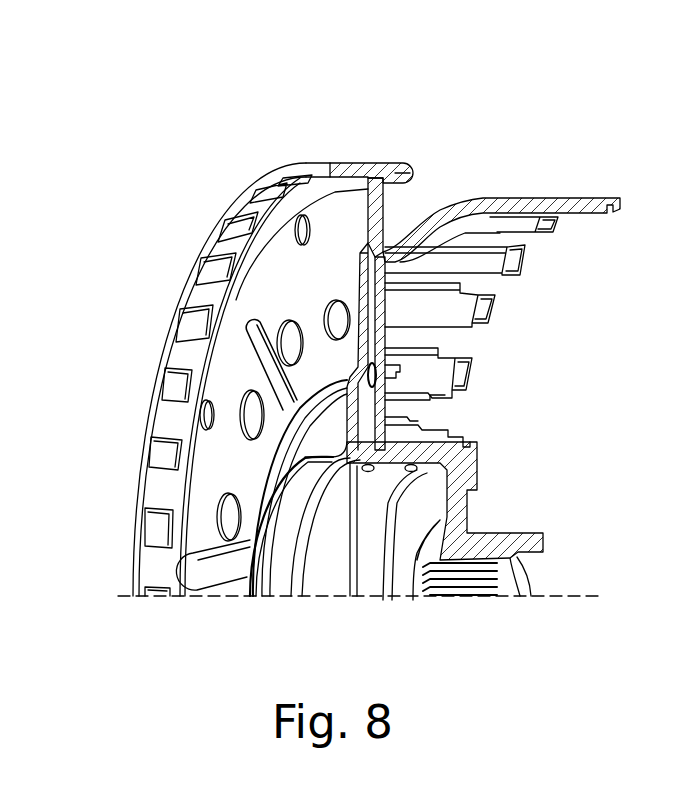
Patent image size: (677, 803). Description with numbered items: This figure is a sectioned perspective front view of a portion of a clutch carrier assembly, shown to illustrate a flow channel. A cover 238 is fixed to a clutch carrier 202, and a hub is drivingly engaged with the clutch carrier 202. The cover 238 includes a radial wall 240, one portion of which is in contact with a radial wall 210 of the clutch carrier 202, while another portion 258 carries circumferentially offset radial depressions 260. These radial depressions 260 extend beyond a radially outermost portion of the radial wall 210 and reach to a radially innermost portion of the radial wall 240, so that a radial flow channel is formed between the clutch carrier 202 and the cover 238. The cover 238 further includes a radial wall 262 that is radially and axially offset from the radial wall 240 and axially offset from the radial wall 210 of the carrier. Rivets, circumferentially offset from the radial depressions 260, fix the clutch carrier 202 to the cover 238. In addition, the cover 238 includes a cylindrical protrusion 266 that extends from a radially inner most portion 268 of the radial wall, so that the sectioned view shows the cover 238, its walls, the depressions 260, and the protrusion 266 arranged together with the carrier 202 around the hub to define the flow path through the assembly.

The clutch carrier 202 is at (550, 207).
The radial wall 210 is at (377, 420).
The cover 238 is at (400, 162).
The radial wall 240 is at (372, 227).
The portion 258 is at (362, 327).
The radial depressions 260 is at (243, 372).
The radial wall 262 is at (352, 453).
The cylindrical protrusion 266 is at (322, 460).
The radially inner most portion 268 is at (338, 456).